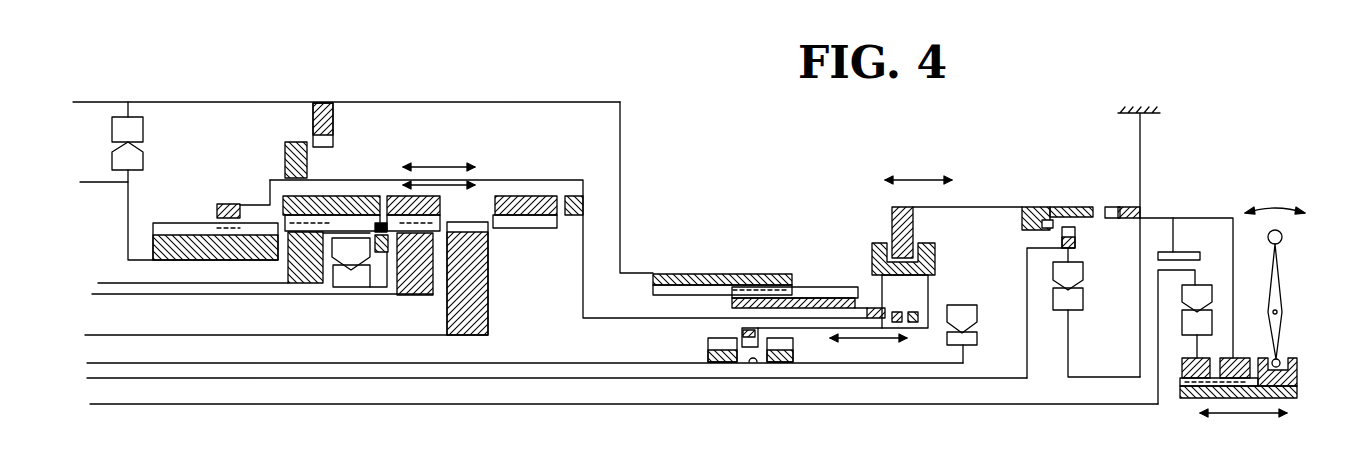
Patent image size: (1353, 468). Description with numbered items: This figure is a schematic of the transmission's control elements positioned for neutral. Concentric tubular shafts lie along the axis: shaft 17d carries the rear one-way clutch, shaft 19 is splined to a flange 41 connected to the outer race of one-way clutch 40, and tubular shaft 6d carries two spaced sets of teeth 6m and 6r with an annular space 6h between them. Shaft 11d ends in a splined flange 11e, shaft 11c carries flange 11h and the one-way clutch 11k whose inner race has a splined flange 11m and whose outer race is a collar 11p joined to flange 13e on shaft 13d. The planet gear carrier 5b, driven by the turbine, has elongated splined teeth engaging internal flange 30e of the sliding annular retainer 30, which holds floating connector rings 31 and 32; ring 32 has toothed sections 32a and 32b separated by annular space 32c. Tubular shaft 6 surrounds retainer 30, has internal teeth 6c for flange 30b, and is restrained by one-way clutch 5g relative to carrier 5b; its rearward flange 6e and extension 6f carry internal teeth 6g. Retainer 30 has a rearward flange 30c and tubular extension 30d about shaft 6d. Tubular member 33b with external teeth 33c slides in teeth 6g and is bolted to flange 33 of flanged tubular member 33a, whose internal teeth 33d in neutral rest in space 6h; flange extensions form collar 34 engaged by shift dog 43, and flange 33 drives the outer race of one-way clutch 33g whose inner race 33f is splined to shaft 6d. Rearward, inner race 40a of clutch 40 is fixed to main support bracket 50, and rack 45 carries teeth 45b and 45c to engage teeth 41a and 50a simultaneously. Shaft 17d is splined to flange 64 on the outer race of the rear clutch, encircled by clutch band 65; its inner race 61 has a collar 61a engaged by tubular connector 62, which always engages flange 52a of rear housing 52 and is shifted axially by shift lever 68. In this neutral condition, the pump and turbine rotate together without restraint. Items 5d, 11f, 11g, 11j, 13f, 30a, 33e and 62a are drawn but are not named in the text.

The planet gear carrier 5b is at (130, 262).
The piston 5d is at (180, 229).
The one-way clutch 5g is at (131, 118).
The tubular shaft 6 is at (197, 102).
The internal teeth 6c is at (325, 108).
The tubular shaft 6d is at (262, 366).
The inwardly extending flange 6e is at (621, 165).
The tubular extension 6f is at (637, 272).
The splined internal teeth 6g is at (690, 280).
The annular space 6h is at (753, 363).
The teeth 6m is at (709, 346).
The teeth 6r is at (791, 346).
The tubular shaft 11c is at (238, 297).
The shaft 11d is at (170, 340).
The flange 11e is at (489, 331).
The cavity 11f is at (489, 245).
The passage 11g is at (389, 294).
The flange 11h is at (417, 296).
The land 11j is at (436, 225).
The one-way clutch 11k is at (357, 288).
The outwardly extending flange 11m is at (386, 223).
The collar 11p is at (350, 237).
The tubular shaft 13d is at (178, 285).
The flange 13e is at (303, 285).
The passage 13f is at (329, 236).
The tubular shaft 17d is at (243, 408).
The tubular shaft 19 is at (186, 383).
The annular retainer 30 is at (522, 180).
The stop 30a is at (237, 186).
The flange 30b is at (300, 150).
The inwardly extending flange 30c is at (584, 300).
The tubular extension 30d is at (651, 322).
The internal flange 30e is at (269, 186).
The connector ring 31 is at (331, 213).
The connector ring 32 is at (545, 198).
The internally toothed section 32a is at (425, 218).
The internally toothed section 32b is at (545, 229).
The annular space 32c is at (478, 202).
The flange 33 is at (930, 293).
The flanged tubular member 33a is at (848, 338).
The tubular member 33b is at (827, 302).
The splined external teeth 33c is at (805, 292).
The internal teeth 33d is at (742, 335).
The seal 33e is at (897, 312).
The inner race 33f is at (968, 350).
The one-way clutch 33g is at (1002, 323).
The annular collar 34 is at (925, 251).
The one-way clutch 40 is at (1088, 285).
The inner race 40a is at (1083, 298).
The flange 41 is at (1028, 328).
The splined teeth 41a is at (1062, 236).
The shift dog 43 is at (900, 231).
The rack 45 is at (995, 201).
The tooth 45b is at (1040, 210).
The tooth 45c is at (1087, 210).
The main support bracket 50 is at (1138, 147).
The teeth 50a is at (1112, 219).
The rear housing 52 is at (1232, 251).
The rear housing section 52a is at (1252, 398).
The inner race 61 is at (1200, 335).
The collar 61a is at (1185, 398).
The tubular connector 62 is at (1298, 392).
The port 62a is at (1212, 400).
The flange 64 is at (1157, 362).
The clutch band 65 is at (1178, 254).
The shift lever 68 is at (1283, 281).